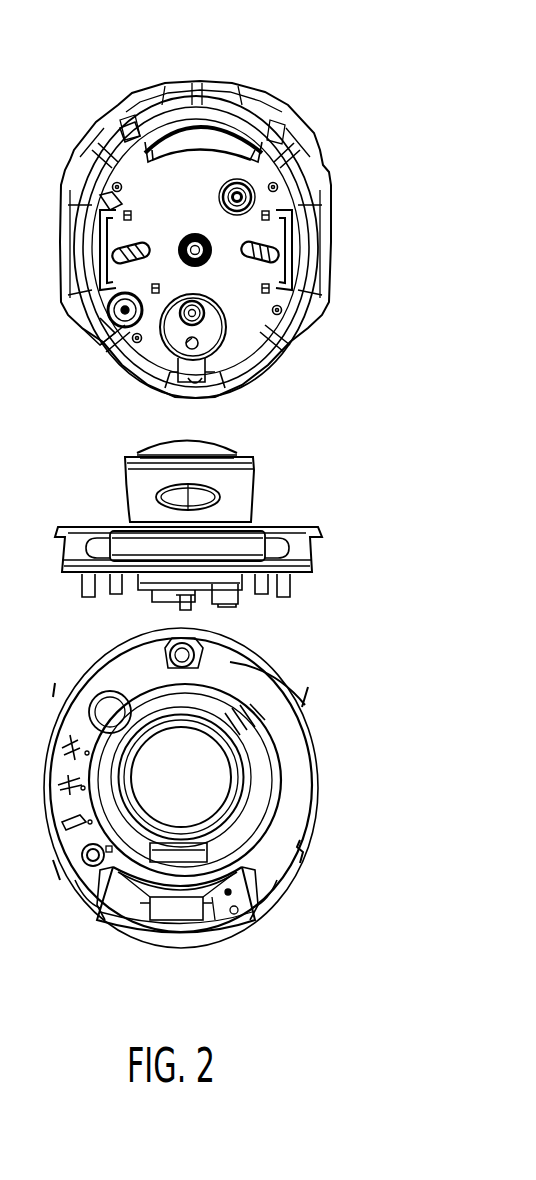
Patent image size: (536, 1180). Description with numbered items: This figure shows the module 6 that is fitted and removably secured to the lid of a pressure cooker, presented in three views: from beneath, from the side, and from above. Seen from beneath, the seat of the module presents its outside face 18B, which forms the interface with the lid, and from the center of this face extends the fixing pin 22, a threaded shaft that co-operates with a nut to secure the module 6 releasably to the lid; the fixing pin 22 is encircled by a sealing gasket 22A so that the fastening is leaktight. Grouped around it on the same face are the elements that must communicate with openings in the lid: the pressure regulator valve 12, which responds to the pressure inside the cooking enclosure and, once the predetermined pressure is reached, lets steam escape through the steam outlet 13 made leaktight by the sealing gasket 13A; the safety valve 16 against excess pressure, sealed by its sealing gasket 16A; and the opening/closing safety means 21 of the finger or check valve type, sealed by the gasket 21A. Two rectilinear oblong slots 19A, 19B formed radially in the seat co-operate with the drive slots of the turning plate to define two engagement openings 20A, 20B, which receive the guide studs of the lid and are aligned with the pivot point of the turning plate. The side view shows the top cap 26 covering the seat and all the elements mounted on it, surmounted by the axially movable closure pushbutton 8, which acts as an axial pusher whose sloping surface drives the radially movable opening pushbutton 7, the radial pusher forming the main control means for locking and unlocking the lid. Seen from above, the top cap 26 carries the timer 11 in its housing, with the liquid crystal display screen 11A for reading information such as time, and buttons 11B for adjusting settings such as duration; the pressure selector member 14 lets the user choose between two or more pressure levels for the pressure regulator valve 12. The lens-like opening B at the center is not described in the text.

The module 6 is at (298, 110).
The opening pushbutton 7 is at (162, 503).
The closure pushbutton 8 is at (155, 447).
The timer 11 is at (212, 940).
The liquid crystal display screen 11A is at (167, 912).
The buttons 11B is at (244, 895).
The pressure regulator valve 12 is at (226, 322).
The steam outlet 13 is at (186, 346).
The sealing gasket 13A is at (202, 316).
The pressure selector member 14 is at (82, 852).
The safety valve 16 is at (242, 185).
The sealing gasket 16A is at (232, 197).
The outside face 18B is at (148, 190).
The rectilinear oblong slot 19A is at (100, 280).
The rectilinear oblong slot 19B is at (282, 228).
The engagement opening 20A is at (150, 241).
The engagement opening 20B is at (273, 278).
The opening/closing safety means 21 is at (93, 333).
The gasket 21A is at (108, 312).
The fixing pin 22 is at (193, 233).
The sealing gasket 22A is at (124, 216).
The top cap 26 is at (245, 796).
The lens opening B is at (207, 768).